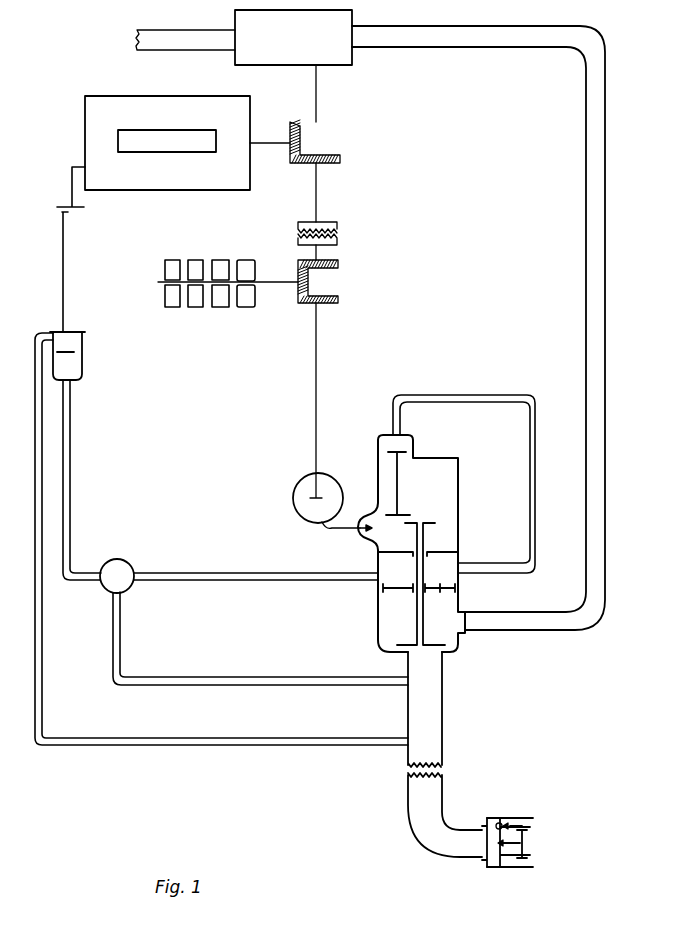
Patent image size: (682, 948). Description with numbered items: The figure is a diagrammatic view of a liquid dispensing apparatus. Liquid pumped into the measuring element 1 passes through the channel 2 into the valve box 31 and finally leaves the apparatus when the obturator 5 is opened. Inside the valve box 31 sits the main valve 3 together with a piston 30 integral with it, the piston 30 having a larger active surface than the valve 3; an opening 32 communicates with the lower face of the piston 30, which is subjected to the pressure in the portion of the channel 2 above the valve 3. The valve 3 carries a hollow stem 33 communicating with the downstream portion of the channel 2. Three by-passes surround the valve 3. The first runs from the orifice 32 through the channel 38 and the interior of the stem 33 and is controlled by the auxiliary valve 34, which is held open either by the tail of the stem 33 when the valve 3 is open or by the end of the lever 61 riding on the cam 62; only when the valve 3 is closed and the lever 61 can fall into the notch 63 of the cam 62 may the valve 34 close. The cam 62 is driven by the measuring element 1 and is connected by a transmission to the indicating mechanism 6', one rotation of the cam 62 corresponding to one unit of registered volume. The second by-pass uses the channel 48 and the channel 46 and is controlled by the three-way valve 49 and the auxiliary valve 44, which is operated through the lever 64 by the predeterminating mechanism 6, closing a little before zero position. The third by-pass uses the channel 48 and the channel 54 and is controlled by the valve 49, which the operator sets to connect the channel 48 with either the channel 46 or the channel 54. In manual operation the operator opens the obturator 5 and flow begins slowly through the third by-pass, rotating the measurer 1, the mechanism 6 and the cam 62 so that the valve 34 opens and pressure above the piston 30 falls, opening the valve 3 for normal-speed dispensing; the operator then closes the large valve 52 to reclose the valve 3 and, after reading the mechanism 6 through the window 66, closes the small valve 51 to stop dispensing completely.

The measuring element 1 is at (347, 62).
The channel 2 is at (592, 327).
The main valve 3 is at (428, 652).
The element (obturator) 5 is at (500, 827).
The predeterminating mechanism 6 is at (187, 157).
The indicating mechanism 6' is at (210, 303).
The piston 30 is at (400, 589).
The valve box 31 is at (463, 607).
The opening (orifice) 32 is at (443, 589).
The hollow stem 33 is at (425, 530).
The auxiliary valve 34 is at (399, 486).
The channel (first by-pass) 38 is at (535, 493).
The auxiliary valve 44 is at (92, 366).
The channel 46 is at (42, 648).
The channel 48 is at (267, 581).
The three-way valve 49 is at (120, 565).
The small valve 51 is at (505, 845).
The large valve 52 is at (487, 866).
The channel 54 is at (209, 679).
The lever 61 is at (343, 532).
The cam 62 is at (297, 507).
The notch 63 is at (322, 529).
The lever 64 is at (72, 176).
The window 66 is at (160, 143).